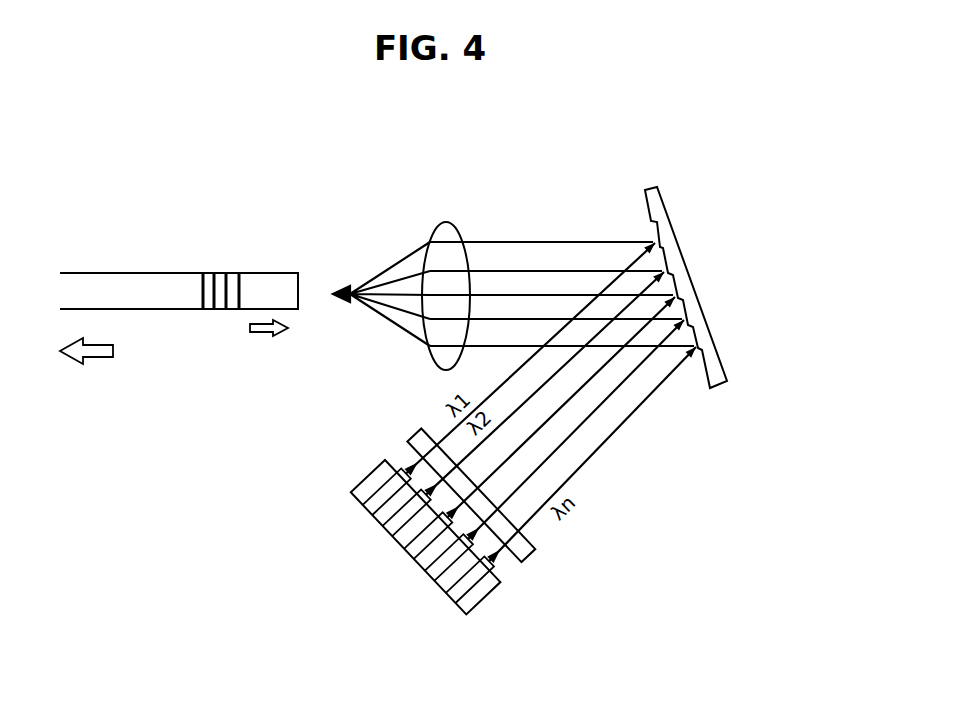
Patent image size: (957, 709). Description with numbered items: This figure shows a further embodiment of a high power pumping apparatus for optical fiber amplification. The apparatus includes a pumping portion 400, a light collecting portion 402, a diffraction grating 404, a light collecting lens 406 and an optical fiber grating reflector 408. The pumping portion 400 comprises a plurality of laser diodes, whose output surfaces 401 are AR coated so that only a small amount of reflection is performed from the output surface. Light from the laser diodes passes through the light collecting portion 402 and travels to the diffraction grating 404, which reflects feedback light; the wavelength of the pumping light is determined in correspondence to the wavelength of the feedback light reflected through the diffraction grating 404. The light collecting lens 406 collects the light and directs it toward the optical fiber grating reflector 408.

The pumping portion 400 is at (467, 606).
The output surfaces 401 is at (492, 570).
The light collecting portion 402 is at (527, 548).
The diffraction grating 404 is at (715, 368).
The light collecting lens 406 is at (458, 229).
The optical fiber grating reflector 408 is at (143, 280).